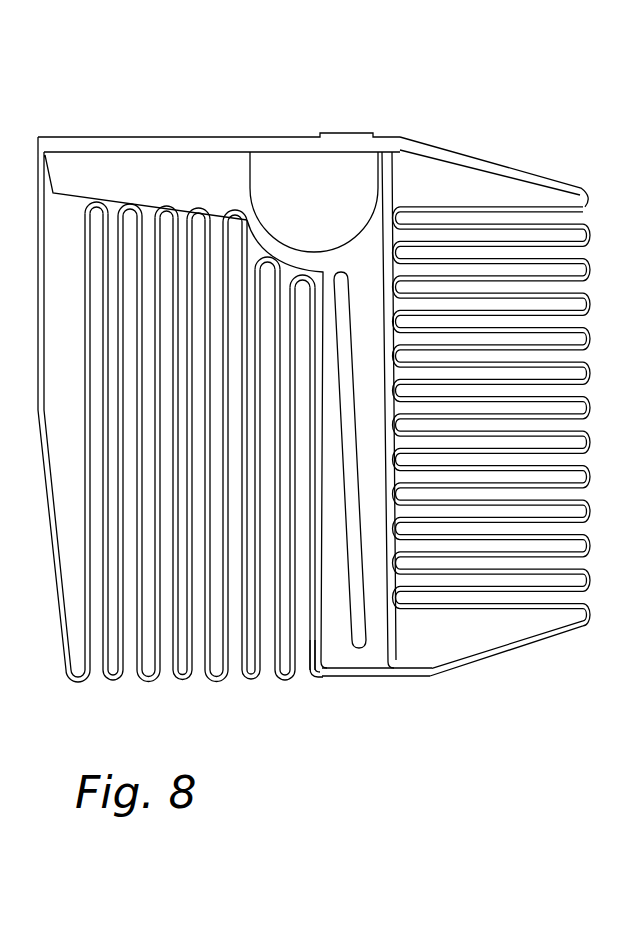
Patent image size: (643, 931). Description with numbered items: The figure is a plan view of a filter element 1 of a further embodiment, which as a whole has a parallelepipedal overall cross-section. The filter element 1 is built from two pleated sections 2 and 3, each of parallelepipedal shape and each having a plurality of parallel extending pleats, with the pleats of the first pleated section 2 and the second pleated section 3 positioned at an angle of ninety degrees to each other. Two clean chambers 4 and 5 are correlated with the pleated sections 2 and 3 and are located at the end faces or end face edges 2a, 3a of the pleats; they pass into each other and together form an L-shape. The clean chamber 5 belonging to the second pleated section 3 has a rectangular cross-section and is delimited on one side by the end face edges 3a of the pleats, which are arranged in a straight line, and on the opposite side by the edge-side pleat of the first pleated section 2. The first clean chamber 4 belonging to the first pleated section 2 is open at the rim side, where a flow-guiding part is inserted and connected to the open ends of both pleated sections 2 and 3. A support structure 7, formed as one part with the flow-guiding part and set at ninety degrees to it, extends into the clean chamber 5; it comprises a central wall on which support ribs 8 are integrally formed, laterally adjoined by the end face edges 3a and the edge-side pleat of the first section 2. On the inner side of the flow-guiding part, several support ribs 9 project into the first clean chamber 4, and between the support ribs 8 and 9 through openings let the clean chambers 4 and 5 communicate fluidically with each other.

The filter element 1 is at (184, 96).
The first pleated section 2 is at (101, 689).
The end face edges of the first pleated section 2a is at (133, 208).
The second pleated section 3 is at (598, 560).
The end face edges of the second pleated section 3a is at (396, 252).
The first clean chamber 4 is at (205, 175).
The second clean chamber 5 is at (343, 647).
The support structure 7 is at (362, 633).
The support ribs 8 is at (384, 628).
The support ribs 9 is at (238, 172).